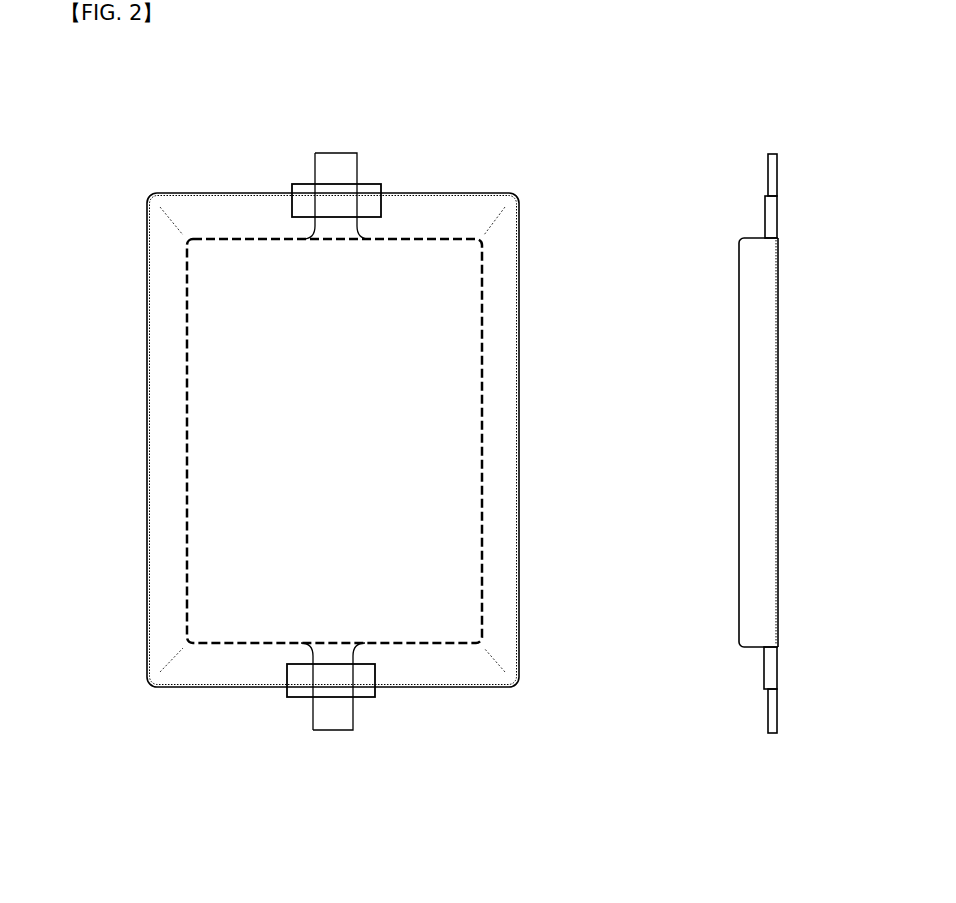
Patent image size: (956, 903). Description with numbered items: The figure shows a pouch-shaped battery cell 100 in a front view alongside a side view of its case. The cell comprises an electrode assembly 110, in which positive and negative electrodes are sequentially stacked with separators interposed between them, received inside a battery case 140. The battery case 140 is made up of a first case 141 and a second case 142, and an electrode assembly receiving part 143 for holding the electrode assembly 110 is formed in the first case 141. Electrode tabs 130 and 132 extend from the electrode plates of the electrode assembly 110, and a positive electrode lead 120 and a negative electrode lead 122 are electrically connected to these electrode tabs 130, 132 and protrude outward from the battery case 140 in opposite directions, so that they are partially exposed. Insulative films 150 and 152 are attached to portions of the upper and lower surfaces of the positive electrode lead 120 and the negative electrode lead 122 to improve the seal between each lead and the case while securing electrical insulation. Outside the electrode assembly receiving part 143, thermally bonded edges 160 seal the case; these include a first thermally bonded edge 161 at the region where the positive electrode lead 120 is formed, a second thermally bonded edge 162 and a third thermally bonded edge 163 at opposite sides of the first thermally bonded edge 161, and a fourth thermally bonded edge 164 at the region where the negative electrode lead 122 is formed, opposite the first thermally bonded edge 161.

The pouch-shaped battery cell 100 is at (115, 117).
The electrode assembly 110 is at (486, 343).
The positive electrode lead 120 is at (315, 153).
The negative electrode lead 122 is at (313, 733).
The electrode tab 130 is at (380, 225).
The electrode tab 132 is at (307, 645).
The battery case 140 is at (390, 423).
The first case 141 is at (739, 318).
The second case 142 is at (778, 318).
The electrode assembly receiving part 143 is at (486, 570).
The insulative film 150 is at (368, 183).
The insulative film 152 is at (368, 700).
The thermally bonded edges 160 is at (520, 243).
The first thermally bonded edge 161 is at (200, 215).
The second thermally bonded edge 162 is at (160, 541).
The third thermally bonded edge 163 is at (507, 620).
The fourth thermally bonded edge 164 is at (436, 680).